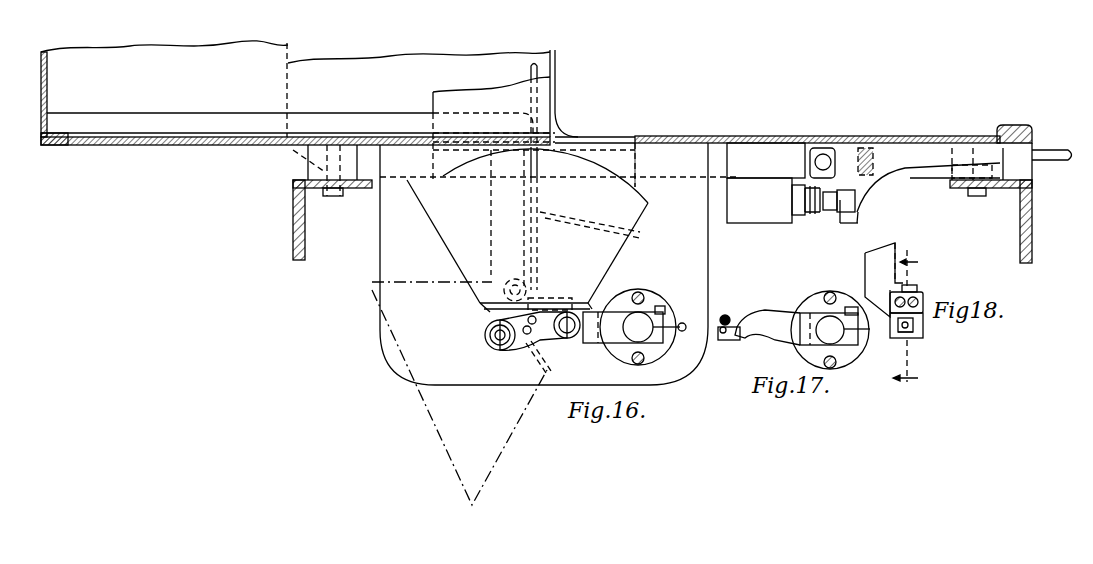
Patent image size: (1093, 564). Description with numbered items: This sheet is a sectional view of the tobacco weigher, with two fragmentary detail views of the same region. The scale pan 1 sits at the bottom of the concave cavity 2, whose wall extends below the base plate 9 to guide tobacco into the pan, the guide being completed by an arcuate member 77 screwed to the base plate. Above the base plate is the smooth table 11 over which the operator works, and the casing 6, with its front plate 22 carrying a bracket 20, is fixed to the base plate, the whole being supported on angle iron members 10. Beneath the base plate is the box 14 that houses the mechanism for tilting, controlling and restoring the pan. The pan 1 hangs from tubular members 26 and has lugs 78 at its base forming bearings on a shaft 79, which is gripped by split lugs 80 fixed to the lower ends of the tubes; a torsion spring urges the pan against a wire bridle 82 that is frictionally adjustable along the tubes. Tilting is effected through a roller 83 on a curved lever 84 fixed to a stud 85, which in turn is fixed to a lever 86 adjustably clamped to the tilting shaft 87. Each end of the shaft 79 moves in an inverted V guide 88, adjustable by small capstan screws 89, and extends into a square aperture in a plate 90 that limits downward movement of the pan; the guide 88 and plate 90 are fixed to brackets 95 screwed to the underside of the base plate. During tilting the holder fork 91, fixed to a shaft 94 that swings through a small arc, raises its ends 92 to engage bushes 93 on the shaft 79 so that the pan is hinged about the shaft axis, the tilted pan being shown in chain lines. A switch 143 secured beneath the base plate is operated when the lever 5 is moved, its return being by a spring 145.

In FIG. 16, the scale pan 1 is at (447, 248).
In FIG. 16, the cavity 2 is at (492, 108).
In FIG. 16, the lever 5 is at (1040, 152).
In FIG. 16, the casing 6 is at (162, 54).
In FIG. 16, the base plate 9 is at (795, 136).
In FIG. 16, the angle iron members 10 is at (306, 230).
In FIG. 16, the table 11 is at (917, 135).
In FIG. 16, the box 14 is at (711, 284).
In FIG. 18, the bracket 20 is at (912, 316).
In FIG. 16, the front plate 22 is at (538, 92).
In FIG. 16, the tubular members 26 is at (543, 213).
In FIG. 16, the arcuate member 77 is at (638, 157).
In FIG. 16, the lugs 78 is at (550, 308).
In FIG. 16, the shaft 79 is at (532, 326).
In FIG. 17, the shaft 79 is at (719, 334).
In FIG. 18, the shaft 79 is at (917, 326).
In FIG. 16, the split lugs 80 is at (542, 347).
In FIG. 16, the wire bridle 82 is at (632, 233).
In FIG. 16, the roller 83 is at (570, 338).
In FIG. 16, the curved lever 84 is at (526, 333).
In FIG. 16, the stud 85 is at (486, 341).
In FIG. 16, the lever 86 is at (487, 325).
In FIG. 16, the tilting shaft 87 is at (538, 288).
In FIG. 18, the inverted V guide 88 is at (905, 336).
In FIG. 18, the capstan screws 89 is at (906, 291).
In FIG. 18, the plate 90 is at (893, 322).
In FIG. 16, the holder fork 91 is at (600, 344).
In FIG. 17, the holder fork 91 is at (783, 318).
In FIG. 17, the fork ends 92 is at (738, 339).
In FIG. 17, the bushes 93 is at (728, 316).
In FIG. 16, the shaft 94 is at (640, 323).
In FIG. 17, the shaft 94 is at (833, 333).
In FIG. 16, the brackets 95 is at (490, 210).
In FIG. 18, the brackets 95 is at (877, 262).
In FIG. 16, the switch 143 is at (773, 218).
In FIG. 16, the spring 145 is at (895, 175).